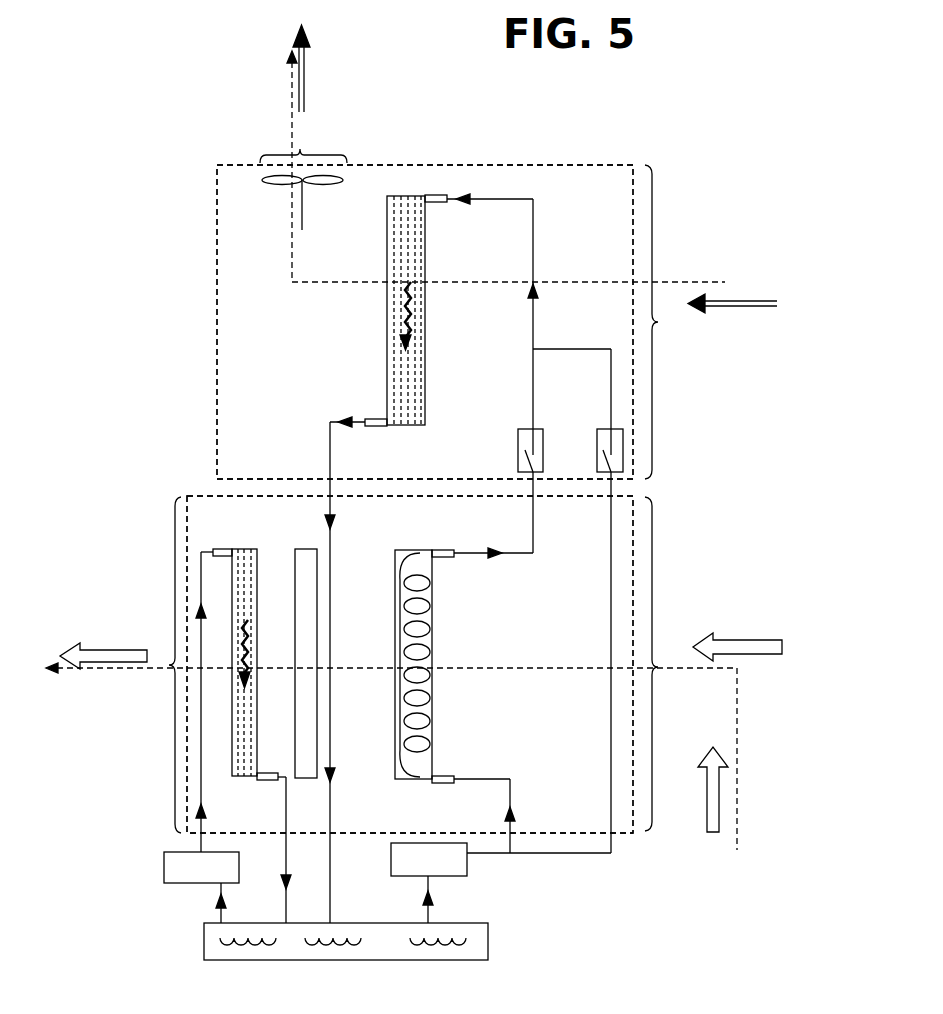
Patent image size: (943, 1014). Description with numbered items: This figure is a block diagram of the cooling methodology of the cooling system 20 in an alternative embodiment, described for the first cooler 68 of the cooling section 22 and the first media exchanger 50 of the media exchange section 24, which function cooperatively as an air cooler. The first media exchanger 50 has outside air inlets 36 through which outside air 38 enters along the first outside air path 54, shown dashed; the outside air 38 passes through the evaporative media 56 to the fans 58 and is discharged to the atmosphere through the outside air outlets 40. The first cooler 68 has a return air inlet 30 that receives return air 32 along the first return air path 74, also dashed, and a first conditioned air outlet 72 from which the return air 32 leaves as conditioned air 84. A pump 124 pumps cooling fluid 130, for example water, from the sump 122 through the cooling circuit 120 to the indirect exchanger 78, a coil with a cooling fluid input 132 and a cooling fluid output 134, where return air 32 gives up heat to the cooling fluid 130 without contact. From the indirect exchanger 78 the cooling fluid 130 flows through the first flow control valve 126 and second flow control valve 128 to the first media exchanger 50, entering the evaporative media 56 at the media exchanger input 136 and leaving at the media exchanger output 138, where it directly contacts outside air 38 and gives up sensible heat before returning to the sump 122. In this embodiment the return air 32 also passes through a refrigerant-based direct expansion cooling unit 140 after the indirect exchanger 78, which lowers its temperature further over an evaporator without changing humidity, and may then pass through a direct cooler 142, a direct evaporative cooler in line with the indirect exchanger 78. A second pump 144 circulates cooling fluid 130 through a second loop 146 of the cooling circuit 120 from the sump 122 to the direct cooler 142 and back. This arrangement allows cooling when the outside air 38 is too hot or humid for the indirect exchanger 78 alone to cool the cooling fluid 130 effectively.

The cooling system 20 is at (671, 995).
The cooling section 22 is at (187, 498).
The media exchange section 24 is at (218, 216).
The air inlet 30 is at (660, 668).
The return air 32 is at (757, 645).
The outside air inlets 36 is at (658, 322).
The outside air 38 is at (305, 58).
The outside air outlets 40 is at (300, 149).
The first media exchanger 50 is at (218, 291).
The first outside air path 54 is at (291, 64).
The evaporative media 56 is at (387, 315).
The fans 58 is at (313, 184).
The first cooler 68 is at (187, 543).
The first conditioned air outlet 72 is at (169, 665).
The first return air path 74 is at (50, 673).
The indirect exchanger 78 is at (432, 635).
The conditioned air 84 is at (133, 645).
The cooling circuit 120 is at (533, 212).
The sump 122 is at (206, 950).
The pump 124 is at (393, 845).
The first flow control valve 126 is at (523, 429).
The second flow control valve 128 is at (603, 429).
The cooling fluid 130 is at (470, 199).
The cooling fluid input 132 is at (447, 776).
The cooling fluid output 134 is at (447, 550).
The media exchanger input 136 is at (437, 196).
The media exchanger output 138 is at (372, 426).
The refrigerant-based direct expansion cooling unit 140 is at (296, 549).
The direct cooler 142 is at (250, 553).
The second pump 144 is at (164, 855).
The second loop 146 is at (201, 748).